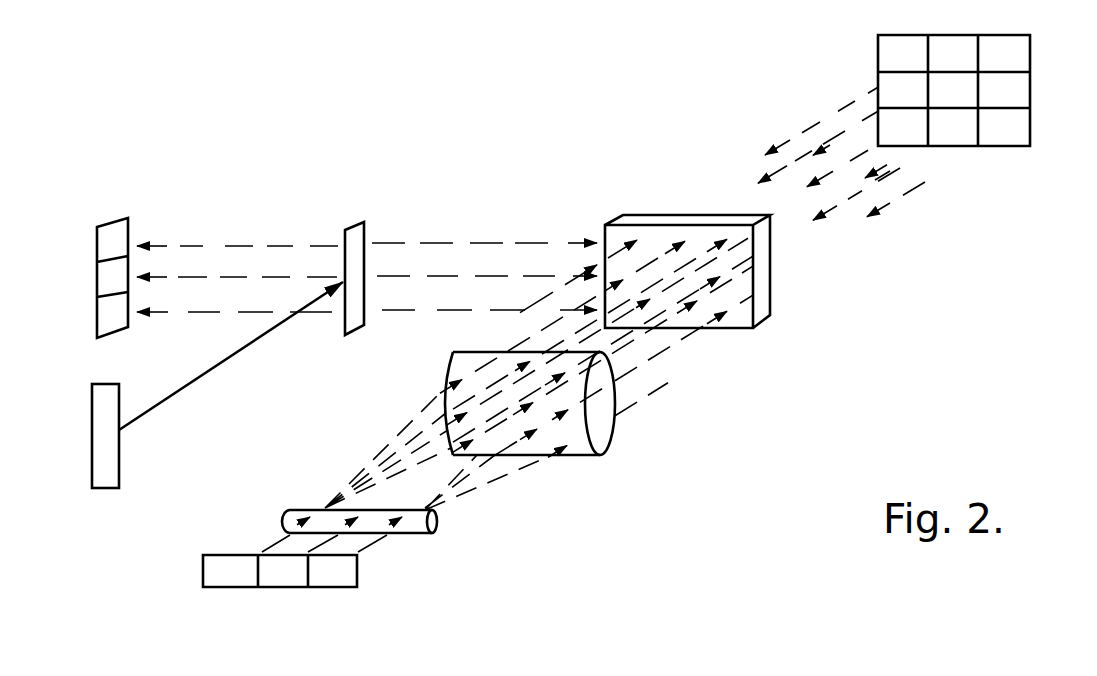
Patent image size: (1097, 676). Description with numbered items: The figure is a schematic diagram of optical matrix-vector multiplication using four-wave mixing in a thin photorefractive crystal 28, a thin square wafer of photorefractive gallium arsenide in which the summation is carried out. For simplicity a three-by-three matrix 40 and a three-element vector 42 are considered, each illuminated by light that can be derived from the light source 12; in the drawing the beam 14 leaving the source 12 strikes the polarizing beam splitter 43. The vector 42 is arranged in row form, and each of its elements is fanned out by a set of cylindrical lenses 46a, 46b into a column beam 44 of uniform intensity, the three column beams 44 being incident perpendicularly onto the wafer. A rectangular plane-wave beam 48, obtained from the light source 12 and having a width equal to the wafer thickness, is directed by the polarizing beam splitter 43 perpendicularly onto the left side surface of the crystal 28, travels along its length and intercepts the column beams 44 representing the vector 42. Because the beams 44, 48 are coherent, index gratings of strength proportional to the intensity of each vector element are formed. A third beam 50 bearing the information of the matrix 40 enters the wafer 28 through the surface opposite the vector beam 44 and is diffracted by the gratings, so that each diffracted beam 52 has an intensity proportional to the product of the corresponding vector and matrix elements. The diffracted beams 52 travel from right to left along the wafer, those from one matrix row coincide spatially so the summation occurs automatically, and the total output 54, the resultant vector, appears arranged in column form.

The light source 12 is at (92, 488).
The laser beam 14 is at (230, 357).
The photorefractive crystal wafer 28 is at (757, 300).
The matrix 40 is at (1022, 93).
The vector 42 is at (357, 587).
The polarizing beam splitter 43 is at (357, 225).
The column beam 44 is at (483, 345).
The cylindrical lens 46a is at (430, 527).
The cylindrical lens 46b is at (600, 450).
The plane-wave beam 48 is at (447, 275).
The matrix beam 50 is at (835, 135).
The diffracted beam 52 is at (243, 243).
The total output 54 is at (128, 218).